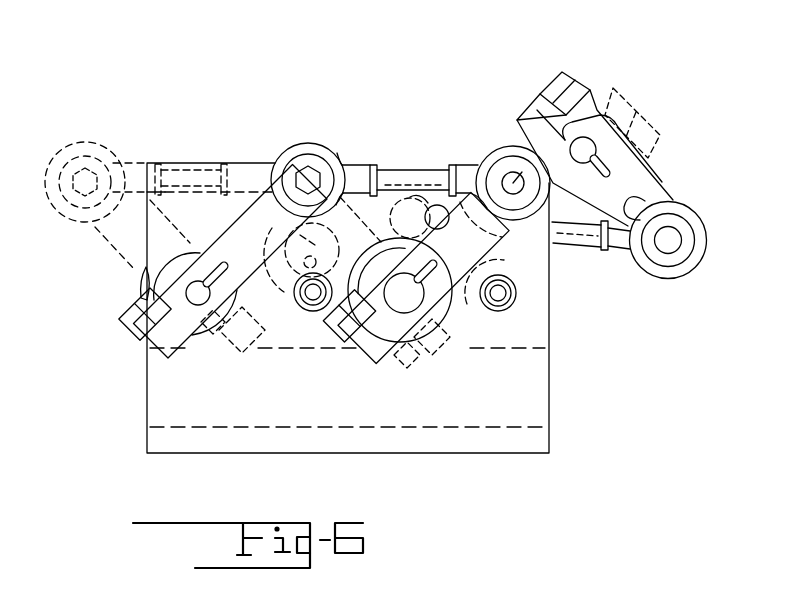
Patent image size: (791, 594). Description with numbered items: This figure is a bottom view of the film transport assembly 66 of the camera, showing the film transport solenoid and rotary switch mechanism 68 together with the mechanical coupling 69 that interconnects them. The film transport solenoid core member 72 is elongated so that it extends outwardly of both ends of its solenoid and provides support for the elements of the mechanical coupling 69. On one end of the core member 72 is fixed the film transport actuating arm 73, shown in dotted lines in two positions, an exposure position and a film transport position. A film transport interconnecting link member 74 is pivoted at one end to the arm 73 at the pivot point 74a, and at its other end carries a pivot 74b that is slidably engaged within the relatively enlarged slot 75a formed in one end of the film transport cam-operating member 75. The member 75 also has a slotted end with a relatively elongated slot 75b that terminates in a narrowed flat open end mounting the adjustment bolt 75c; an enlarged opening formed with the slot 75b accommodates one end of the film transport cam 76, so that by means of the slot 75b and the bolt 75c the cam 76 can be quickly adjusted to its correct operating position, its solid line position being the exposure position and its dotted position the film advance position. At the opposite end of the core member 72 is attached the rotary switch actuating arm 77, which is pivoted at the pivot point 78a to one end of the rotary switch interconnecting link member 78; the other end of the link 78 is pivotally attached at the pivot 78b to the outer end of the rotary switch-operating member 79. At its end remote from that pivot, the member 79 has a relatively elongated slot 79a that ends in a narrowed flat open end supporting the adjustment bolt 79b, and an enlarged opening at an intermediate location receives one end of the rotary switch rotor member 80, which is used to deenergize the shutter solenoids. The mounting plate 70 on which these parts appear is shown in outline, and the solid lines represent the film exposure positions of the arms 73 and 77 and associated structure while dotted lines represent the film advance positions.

The film transport assembly 66 is at (282, 120).
The rotary switch mechanism 68 is at (138, 286).
The mechanical coupling 69 is at (116, 276).
The mounting plate 70 is at (147, 390).
The film transport solenoid core member 72 is at (412, 303).
The film transport actuating arm 73 is at (398, 205).
The film transport interconnecting link member 74 is at (335, 320).
The pivot point 74a is at (439, 205).
The pivot 74b is at (672, 248).
The film transport cam-operating member 75 is at (652, 164).
The enlarged slot 75a is at (645, 202).
The elongated slot 75b is at (600, 104).
The adjustment bolt 75c is at (572, 82).
The film transport cam 76 is at (592, 150).
The rotary switch actuating arm 77 is at (470, 290).
The rotary switch interconnecting link member 78 is at (388, 164).
The pivot point 78a is at (512, 183).
The pivot 78b is at (310, 175).
The rotary switch-operating member 79 is at (226, 228).
The elongated slot 79a is at (224, 278).
The adjustment bolt 79b is at (126, 313).
The rotary switch rotor member 80 is at (200, 282).